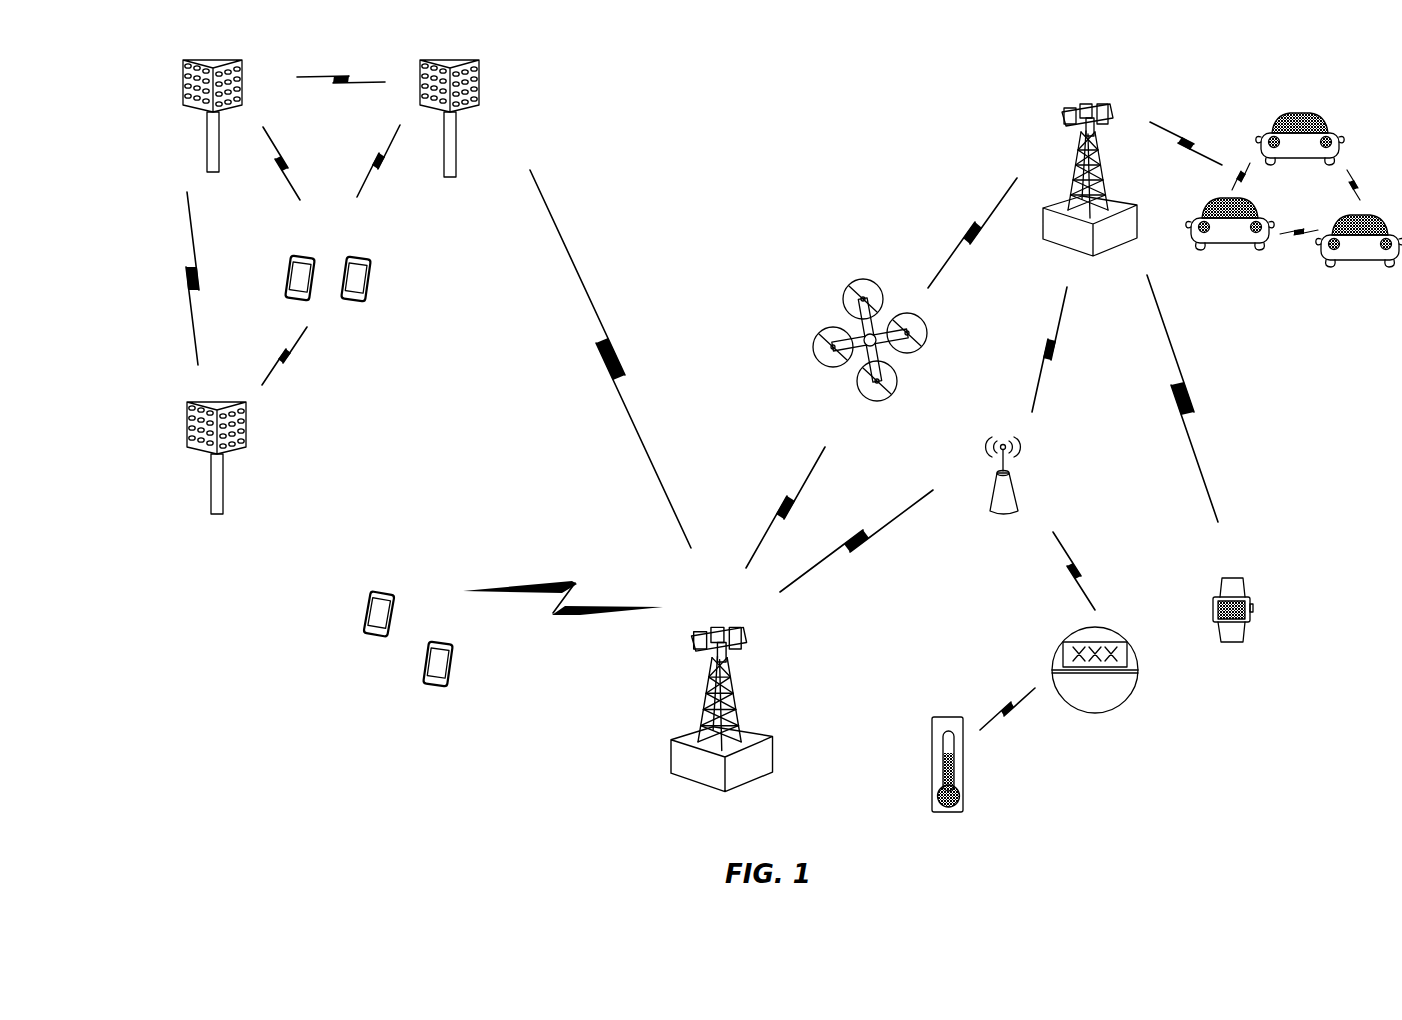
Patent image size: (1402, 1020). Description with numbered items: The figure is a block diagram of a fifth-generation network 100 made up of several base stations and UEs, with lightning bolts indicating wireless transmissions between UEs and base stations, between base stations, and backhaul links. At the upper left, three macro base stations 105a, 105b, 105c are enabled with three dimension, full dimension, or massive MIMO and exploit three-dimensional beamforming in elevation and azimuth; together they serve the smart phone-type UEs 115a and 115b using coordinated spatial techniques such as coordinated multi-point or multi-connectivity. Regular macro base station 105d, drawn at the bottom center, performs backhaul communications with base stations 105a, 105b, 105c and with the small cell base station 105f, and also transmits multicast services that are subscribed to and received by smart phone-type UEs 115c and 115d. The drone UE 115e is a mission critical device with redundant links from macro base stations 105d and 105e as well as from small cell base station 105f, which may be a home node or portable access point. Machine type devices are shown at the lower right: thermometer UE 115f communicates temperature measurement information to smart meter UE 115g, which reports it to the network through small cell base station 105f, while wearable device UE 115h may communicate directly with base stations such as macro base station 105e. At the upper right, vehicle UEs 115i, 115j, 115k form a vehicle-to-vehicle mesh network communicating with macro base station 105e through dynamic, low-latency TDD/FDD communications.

The 5G network 100 is at (864, 88).
The base station 105a is at (207, 150).
The base station 105b is at (451, 169).
The base station 105c is at (210, 508).
The macro base station 105d is at (680, 785).
The macro base station 105e is at (1054, 251).
The small cell base station 105f is at (992, 516).
The UE 115a is at (288, 265).
The UE 115b is at (366, 268).
The UE 115c is at (366, 601).
The UE 115d is at (450, 658).
The UE 115e is at (814, 341).
The UE 115f is at (964, 811).
The UE 115g is at (1115, 713).
The UE 115h is at (1243, 640).
The UE 115i is at (1309, 116).
The UE 115j is at (1385, 266).
The UE 115k is at (1218, 251).